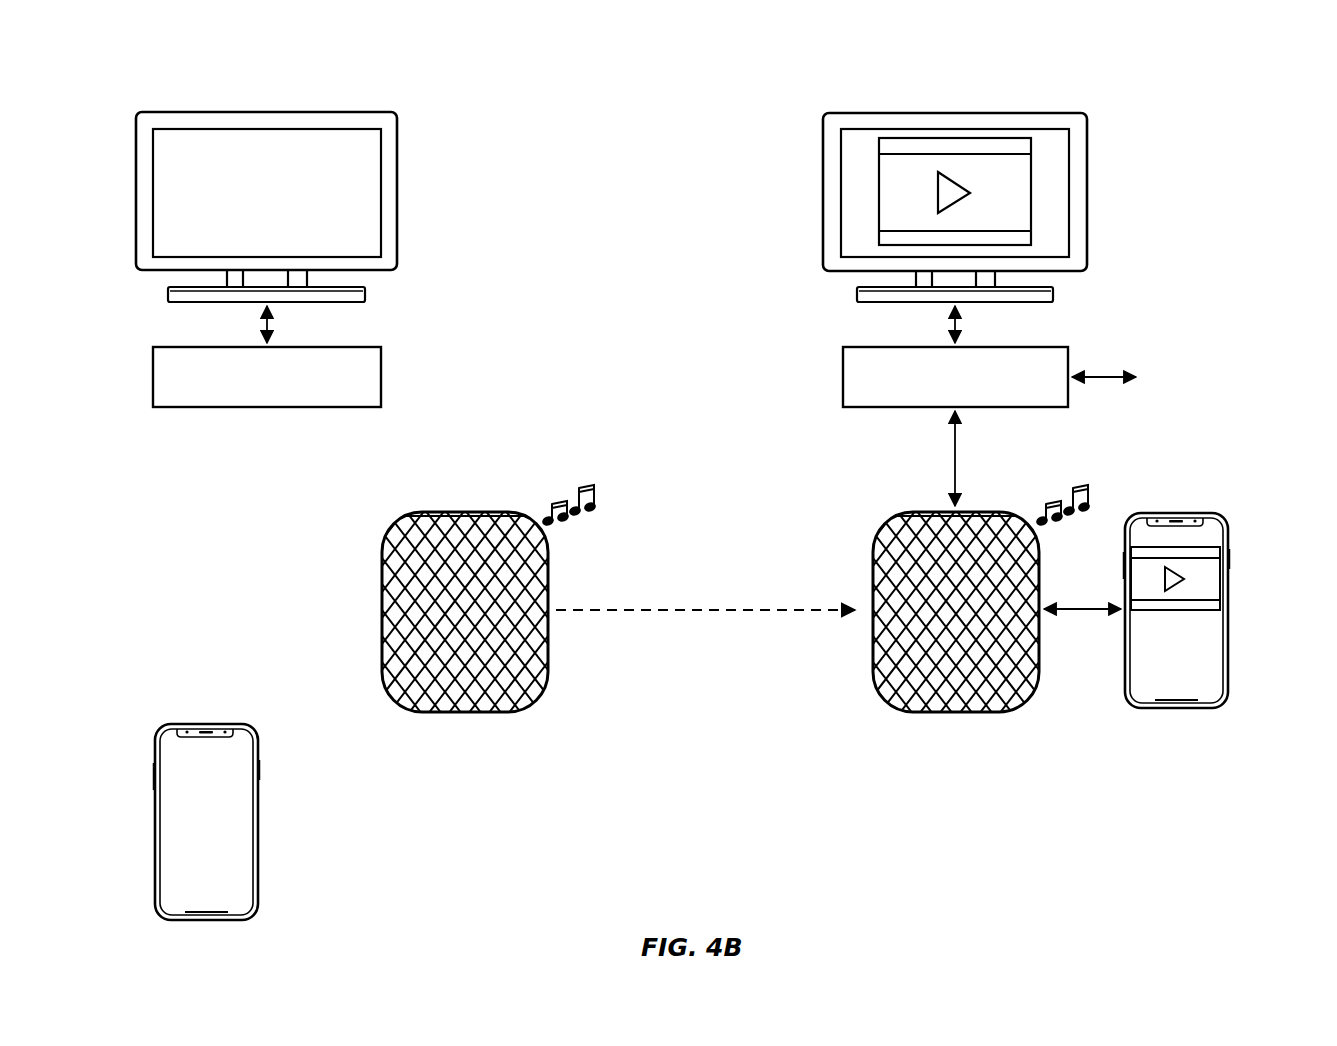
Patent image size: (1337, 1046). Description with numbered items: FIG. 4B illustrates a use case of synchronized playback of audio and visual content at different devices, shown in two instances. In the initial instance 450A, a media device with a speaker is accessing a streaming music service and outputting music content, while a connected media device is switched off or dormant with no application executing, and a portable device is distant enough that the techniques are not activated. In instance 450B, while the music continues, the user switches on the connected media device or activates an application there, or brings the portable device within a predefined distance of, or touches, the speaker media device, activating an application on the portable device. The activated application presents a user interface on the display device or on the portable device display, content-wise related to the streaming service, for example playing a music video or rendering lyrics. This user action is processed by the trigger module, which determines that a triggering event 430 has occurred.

The instance 450A is at (186, 55).
The instance 450B is at (876, 55).
The triggering event 430 is at (708, 584).